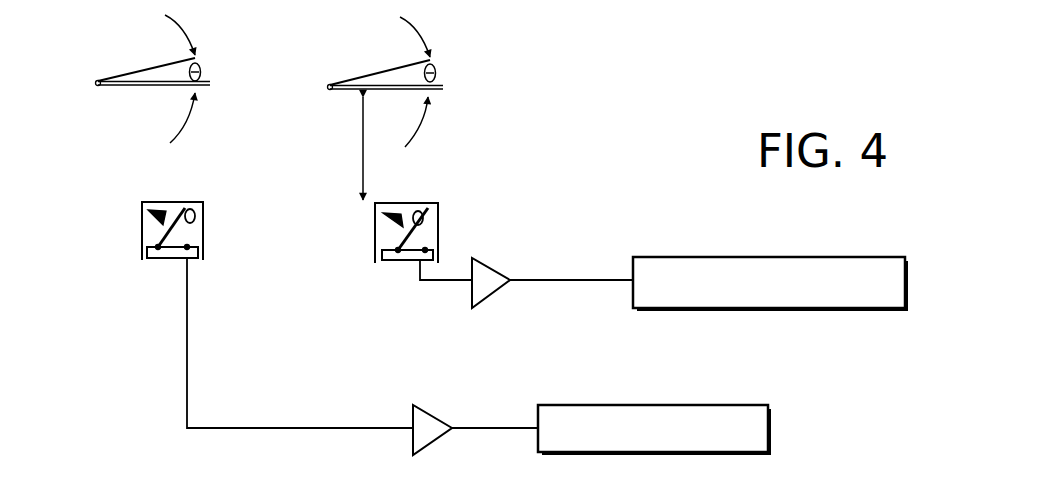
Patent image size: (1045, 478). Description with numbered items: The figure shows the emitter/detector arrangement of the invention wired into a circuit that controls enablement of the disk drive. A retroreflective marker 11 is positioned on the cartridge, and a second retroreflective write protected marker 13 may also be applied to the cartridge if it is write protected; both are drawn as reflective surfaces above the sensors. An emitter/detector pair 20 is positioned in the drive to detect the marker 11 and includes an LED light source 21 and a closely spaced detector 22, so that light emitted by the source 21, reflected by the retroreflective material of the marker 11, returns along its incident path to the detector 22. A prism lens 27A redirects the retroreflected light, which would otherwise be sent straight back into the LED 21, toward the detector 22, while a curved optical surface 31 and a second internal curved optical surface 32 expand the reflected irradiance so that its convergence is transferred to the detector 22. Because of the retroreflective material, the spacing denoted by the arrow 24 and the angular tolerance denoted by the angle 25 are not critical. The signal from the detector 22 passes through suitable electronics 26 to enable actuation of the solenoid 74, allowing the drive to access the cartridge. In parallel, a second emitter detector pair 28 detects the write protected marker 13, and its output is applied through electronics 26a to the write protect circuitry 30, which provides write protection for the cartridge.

The retroreflective marker 11 is at (353, 93).
The write protected marker 13 is at (153, 88).
The emitter/detector pair 20 is at (424, 201).
The LED light source 21 is at (383, 246).
The detector 22 is at (437, 226).
The arrow denoting spacing 24 is at (363, 152).
The angle denoting angular tolerance 25 is at (447, 63).
The electronics 26 is at (500, 270).
The electronics 26a is at (430, 412).
The prism lens 27A is at (397, 203).
The emitter detector pair 28 is at (163, 262).
The write protect circuitry 30 is at (610, 405).
The sensor pointer contact 31 is at (380, 223).
The internal curved optical surface 32 is at (421, 206).
The solenoid 74 is at (712, 257).